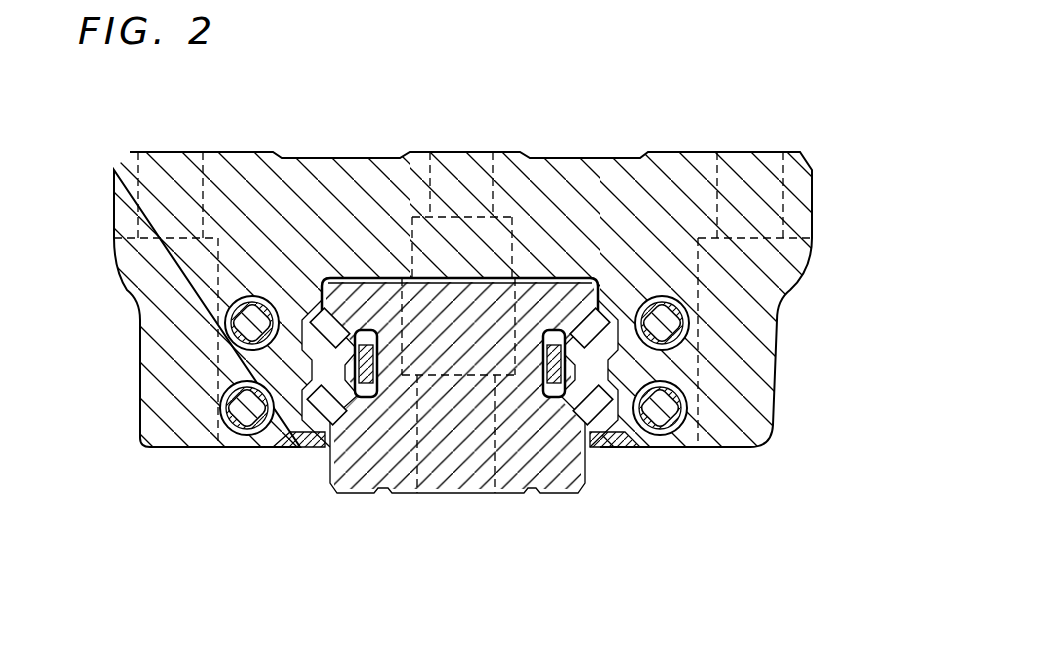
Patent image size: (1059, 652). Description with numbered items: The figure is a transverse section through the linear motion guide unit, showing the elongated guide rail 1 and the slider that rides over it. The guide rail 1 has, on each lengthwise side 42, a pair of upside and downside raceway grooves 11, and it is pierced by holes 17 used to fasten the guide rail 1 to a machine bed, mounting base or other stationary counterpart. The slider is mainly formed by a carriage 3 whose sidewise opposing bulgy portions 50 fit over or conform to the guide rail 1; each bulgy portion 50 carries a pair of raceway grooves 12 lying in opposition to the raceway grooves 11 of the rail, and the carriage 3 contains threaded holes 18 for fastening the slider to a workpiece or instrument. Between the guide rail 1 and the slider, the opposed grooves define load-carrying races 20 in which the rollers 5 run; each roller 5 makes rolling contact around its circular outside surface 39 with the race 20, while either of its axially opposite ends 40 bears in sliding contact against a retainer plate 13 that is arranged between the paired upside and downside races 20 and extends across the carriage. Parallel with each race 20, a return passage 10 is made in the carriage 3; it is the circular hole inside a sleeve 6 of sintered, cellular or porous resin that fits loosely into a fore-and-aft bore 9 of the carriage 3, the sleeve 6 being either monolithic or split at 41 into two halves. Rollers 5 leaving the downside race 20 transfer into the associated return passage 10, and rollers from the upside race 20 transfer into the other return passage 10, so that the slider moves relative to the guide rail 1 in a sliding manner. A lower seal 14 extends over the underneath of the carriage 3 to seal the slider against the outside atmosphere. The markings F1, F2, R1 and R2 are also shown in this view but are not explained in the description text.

The guide rail 1 is at (453, 493).
The carriage 3 is at (647, 213).
The roller 5 is at (265, 320).
The sleeve 6 is at (232, 343).
The fore-and-aft bore 9 is at (247, 398).
The return passage 10 is at (252, 323).
The raceway groove 11 is at (353, 330).
The raceway groove 12 is at (328, 330).
The retainer plate 13 is at (470, 493).
The lower seal 14 is at (297, 450).
The hole 17 is at (440, 500).
The threaded hole 18 is at (143, 185).
The load-carrying race 20 is at (340, 330).
The circular outside surface 39 is at (300, 330).
The axially opposite end 40 is at (313, 335).
The split 41 is at (233, 312).
The lengthwise side 42 is at (590, 450).
The bulgy portion 50 is at (773, 396).
The load direction F1 is at (307, 450).
The load direction F2 is at (288, 450).
The roller row R1 is at (232, 363).
The roller row R2 is at (237, 450).